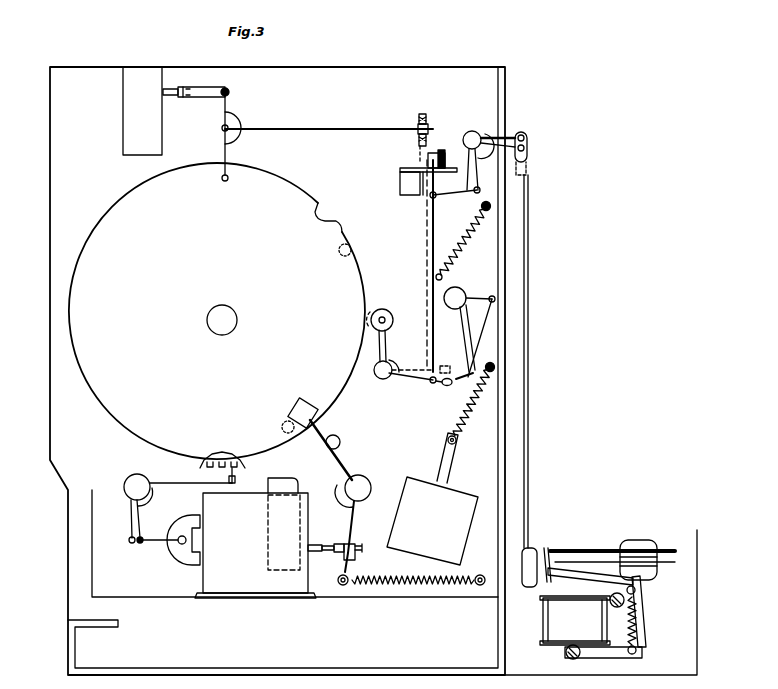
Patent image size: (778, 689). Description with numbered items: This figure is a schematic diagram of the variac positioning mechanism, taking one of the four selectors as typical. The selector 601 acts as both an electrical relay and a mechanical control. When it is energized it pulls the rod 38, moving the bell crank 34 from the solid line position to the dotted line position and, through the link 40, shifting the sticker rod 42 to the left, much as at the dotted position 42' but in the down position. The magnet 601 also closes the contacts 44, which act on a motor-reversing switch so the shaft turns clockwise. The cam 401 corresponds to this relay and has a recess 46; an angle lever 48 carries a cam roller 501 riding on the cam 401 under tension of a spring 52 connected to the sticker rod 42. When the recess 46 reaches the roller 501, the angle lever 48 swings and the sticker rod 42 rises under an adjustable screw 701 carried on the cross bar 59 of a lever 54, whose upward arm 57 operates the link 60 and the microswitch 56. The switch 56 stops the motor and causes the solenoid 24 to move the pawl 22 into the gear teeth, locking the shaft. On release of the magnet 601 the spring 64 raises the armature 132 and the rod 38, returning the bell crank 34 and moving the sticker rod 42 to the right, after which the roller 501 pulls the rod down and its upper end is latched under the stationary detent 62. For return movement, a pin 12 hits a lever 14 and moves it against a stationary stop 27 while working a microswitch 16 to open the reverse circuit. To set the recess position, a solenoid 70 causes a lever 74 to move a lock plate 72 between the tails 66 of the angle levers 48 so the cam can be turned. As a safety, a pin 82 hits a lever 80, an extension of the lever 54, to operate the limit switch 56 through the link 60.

The microswitch 56 is at (146, 75).
The link 60 is at (206, 80).
The upward arm 57 is at (230, 112).
The lever 80 is at (228, 158).
The lever 54 is at (330, 128).
The cross bar 59 is at (428, 124).
The adjustable screw 701 is at (424, 114).
The detent 62 is at (462, 135).
The link 40 is at (452, 194).
The bell crank 34 is at (520, 130).
The rod 38 is at (529, 414).
The cam 401 is at (86, 241).
The recess 46 is at (325, 212).
The safety pin 82 is at (352, 250).
The sticker rod dotted position 42' is at (411, 265).
The sticker rod 42 is at (448, 266).
The spring 52 is at (467, 247).
The cam roller 501 is at (388, 311).
The angle lever 48 is at (387, 346).
The tail 66 is at (445, 387).
The lever 74 is at (475, 297).
The lock plate 72 is at (462, 332).
The pin 12 is at (283, 424).
The stationary stop 27 is at (341, 437).
The lever 14 is at (340, 455).
The microswitch 16 is at (288, 478).
The solenoid 24 is at (255, 545).
The pawl 22 is at (236, 485).
The solenoid 70 is at (432, 499).
The contacts 44 is at (575, 555).
The armature 132 is at (595, 603).
The selector 601 is at (582, 626).
The spring 64 is at (640, 632).